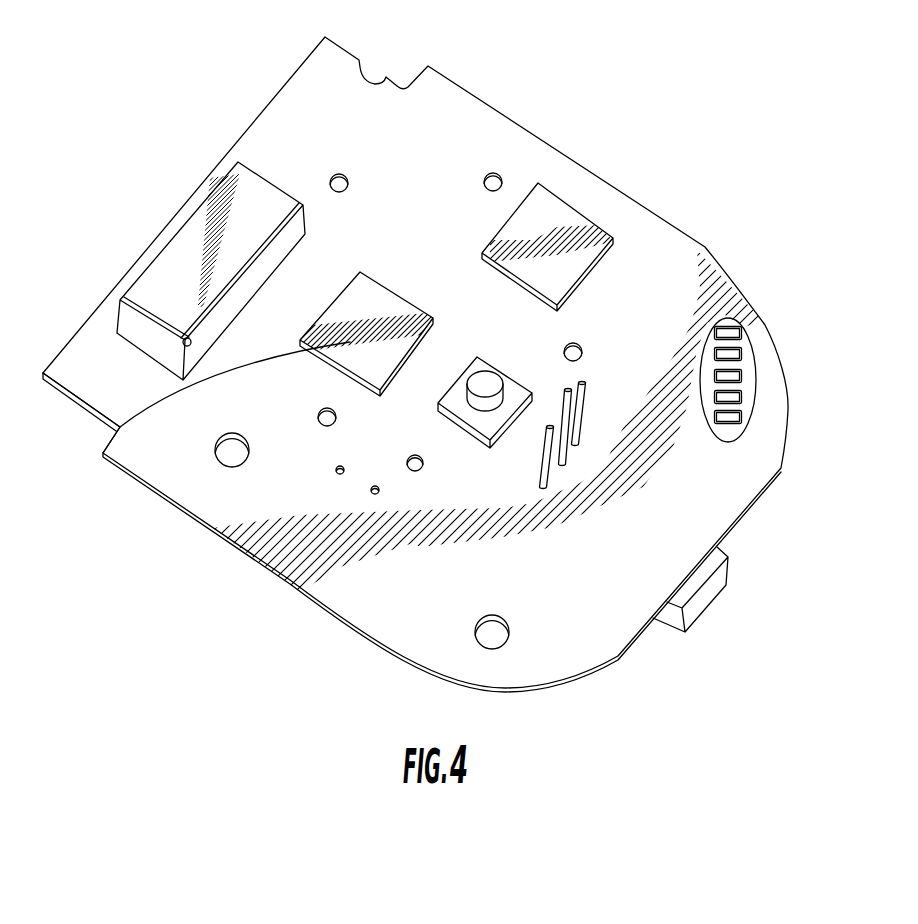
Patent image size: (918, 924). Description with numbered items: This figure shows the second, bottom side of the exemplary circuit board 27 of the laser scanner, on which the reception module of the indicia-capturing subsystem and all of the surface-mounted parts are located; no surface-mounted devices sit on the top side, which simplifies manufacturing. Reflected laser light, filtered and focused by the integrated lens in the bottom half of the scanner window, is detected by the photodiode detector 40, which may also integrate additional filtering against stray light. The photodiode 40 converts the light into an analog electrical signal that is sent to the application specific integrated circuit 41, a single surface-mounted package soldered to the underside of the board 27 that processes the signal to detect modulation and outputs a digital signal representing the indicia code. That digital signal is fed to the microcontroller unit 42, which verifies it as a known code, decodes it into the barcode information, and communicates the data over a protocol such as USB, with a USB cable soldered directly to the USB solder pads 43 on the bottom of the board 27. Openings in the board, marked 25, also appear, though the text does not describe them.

The mounting holes 25 is at (330, 410).
The circuit board 27 is at (392, 567).
The photodiode detector 40 is at (190, 263).
The application specific integrated circuit 41 is at (120, 427).
The microcontroller unit 42 is at (572, 223).
The USB solder pads 43 is at (752, 337).